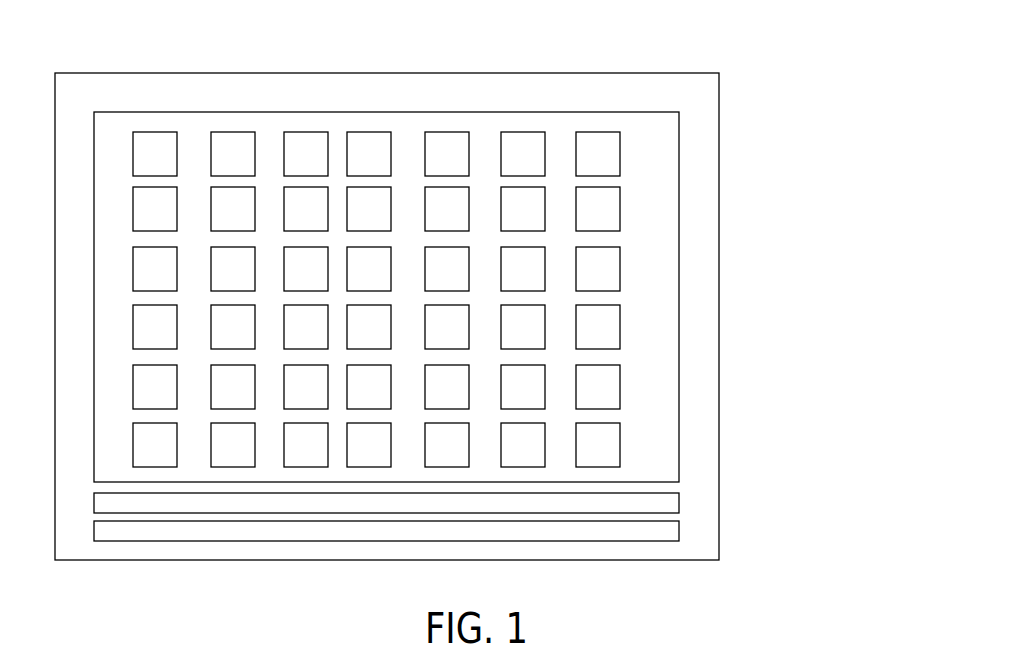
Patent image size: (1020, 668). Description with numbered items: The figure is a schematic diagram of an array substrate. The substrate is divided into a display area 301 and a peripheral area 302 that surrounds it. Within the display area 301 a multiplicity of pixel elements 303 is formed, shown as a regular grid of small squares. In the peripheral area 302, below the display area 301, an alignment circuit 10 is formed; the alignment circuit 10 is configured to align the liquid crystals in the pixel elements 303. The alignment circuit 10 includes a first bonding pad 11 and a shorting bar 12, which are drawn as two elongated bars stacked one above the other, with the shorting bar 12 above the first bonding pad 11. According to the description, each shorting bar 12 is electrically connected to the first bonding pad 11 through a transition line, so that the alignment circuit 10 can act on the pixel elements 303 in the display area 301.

The alignment circuit 10 is at (493, 515).
The first bonding pad 11 is at (668, 532).
The shorting bar 12 is at (668, 502).
The display area 301 is at (650, 300).
The peripheral area 302 is at (698, 190).
The pixel element 303 is at (597, 151).